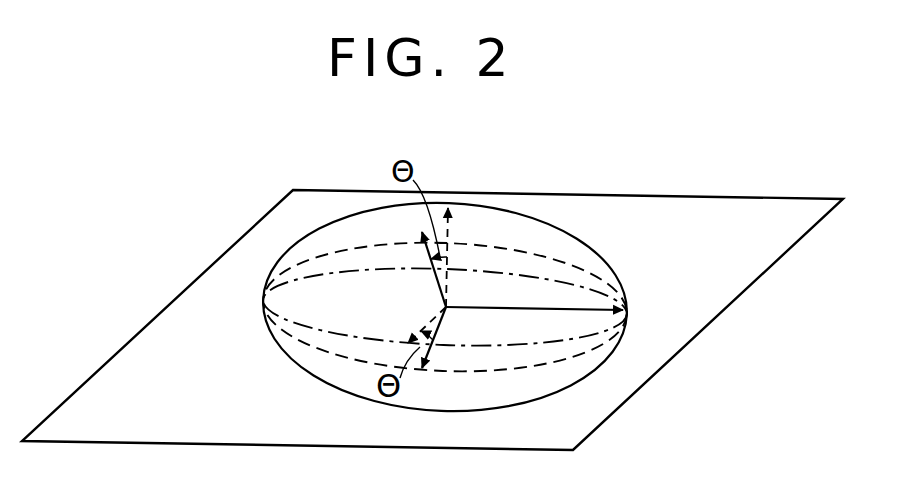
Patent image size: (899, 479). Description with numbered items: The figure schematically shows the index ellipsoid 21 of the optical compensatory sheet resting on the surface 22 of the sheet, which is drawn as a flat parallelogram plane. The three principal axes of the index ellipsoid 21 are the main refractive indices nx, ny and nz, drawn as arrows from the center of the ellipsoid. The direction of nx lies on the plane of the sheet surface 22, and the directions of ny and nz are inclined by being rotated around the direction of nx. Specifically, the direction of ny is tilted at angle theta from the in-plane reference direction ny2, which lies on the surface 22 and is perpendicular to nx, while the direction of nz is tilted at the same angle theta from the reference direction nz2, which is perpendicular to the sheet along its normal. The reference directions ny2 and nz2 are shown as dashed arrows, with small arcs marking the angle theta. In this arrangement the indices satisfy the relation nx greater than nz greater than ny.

The index ellipsoid 21 is at (531, 217).
The surface of the optical compensatory sheet 22 is at (207, 298).
The main refractive index nx is at (534, 326).
The main refractive index ny is at (437, 354).
The main refractive index nz is at (412, 257).
The refractive index in the direction perpendicular to the sheet nz2 is at (465, 231).
The refractive index in the in-plane direction perpendicular to nx ny2 is at (411, 321).